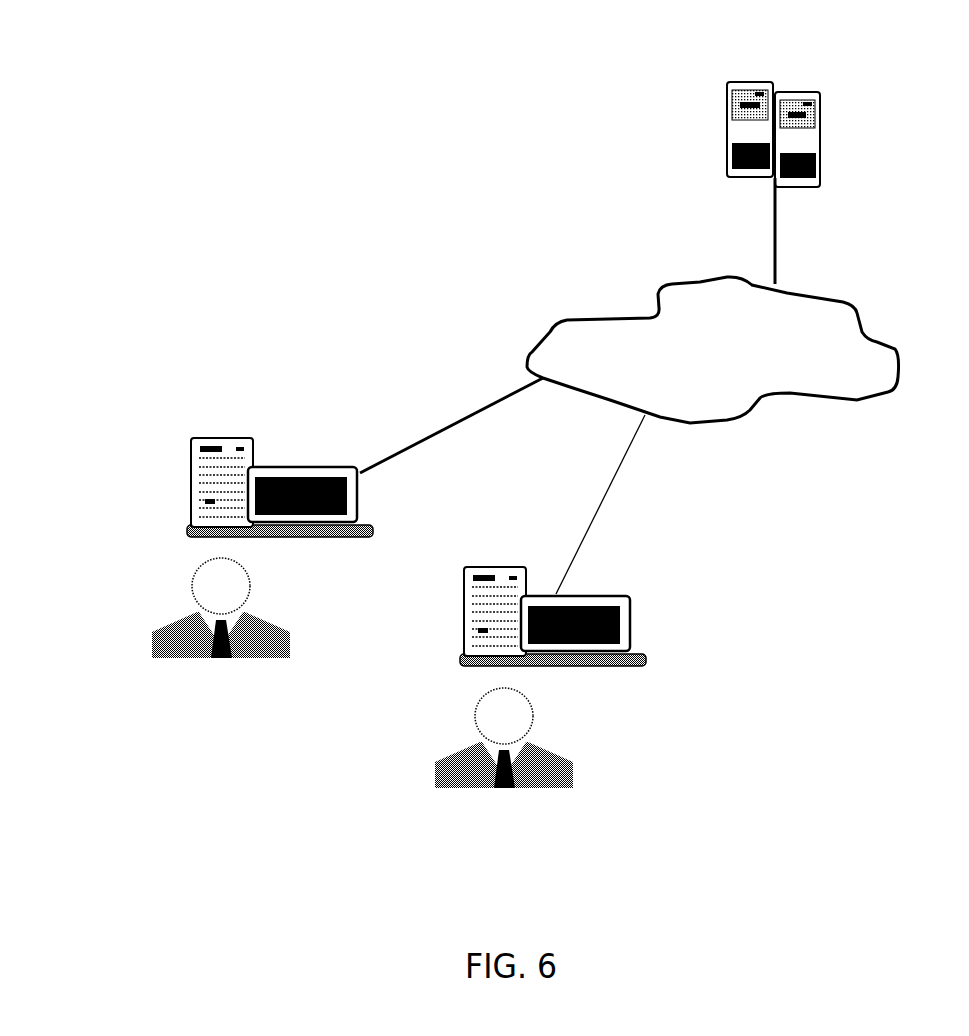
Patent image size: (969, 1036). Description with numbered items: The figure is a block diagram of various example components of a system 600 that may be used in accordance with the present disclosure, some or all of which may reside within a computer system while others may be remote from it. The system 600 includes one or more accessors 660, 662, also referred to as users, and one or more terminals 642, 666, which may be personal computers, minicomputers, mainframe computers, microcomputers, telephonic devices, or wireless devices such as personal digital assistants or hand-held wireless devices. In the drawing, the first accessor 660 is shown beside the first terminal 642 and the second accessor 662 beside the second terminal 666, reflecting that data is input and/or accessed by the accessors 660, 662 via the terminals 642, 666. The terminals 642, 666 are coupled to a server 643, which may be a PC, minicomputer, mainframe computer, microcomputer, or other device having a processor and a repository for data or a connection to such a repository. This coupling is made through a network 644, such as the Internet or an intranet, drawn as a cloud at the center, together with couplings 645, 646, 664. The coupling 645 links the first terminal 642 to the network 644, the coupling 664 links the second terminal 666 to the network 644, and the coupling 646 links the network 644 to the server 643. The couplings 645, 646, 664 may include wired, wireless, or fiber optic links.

The system 600 is at (163, 44).
The server 643 is at (813, 95).
The coupling 646 is at (773, 227).
The network 644 is at (658, 298).
The coupling 645 is at (450, 420).
The coupling 664 is at (615, 492).
The terminal 642 is at (192, 442).
The terminal 666 is at (632, 622).
The accessor 660 is at (180, 618).
The accessor 662 is at (572, 762).